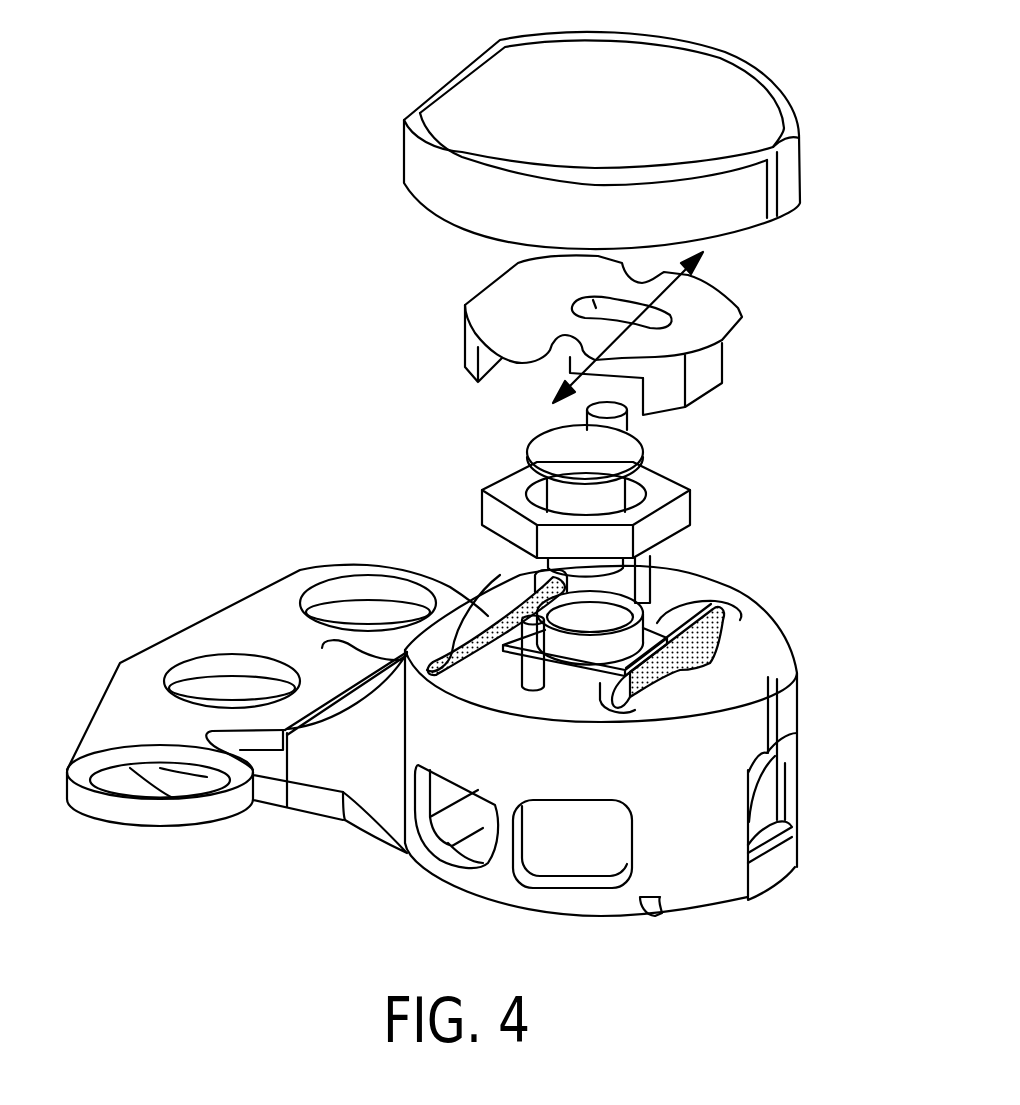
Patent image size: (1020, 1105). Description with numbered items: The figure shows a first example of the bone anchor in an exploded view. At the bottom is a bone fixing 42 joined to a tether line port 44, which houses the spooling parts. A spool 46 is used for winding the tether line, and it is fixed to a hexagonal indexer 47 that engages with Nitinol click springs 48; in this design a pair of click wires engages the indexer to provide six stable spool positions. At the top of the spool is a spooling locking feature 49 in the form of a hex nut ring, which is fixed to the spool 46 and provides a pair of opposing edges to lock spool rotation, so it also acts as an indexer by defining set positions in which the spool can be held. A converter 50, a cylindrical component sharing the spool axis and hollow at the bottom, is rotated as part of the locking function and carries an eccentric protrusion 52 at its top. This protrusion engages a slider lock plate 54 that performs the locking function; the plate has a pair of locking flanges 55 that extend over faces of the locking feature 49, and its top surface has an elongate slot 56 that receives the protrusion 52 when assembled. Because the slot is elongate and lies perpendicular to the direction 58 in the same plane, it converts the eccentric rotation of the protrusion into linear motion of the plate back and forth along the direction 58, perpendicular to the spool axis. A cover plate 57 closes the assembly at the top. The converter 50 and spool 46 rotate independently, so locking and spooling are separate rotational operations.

The bone fixing 42 is at (112, 668).
The tether line port 44 is at (765, 797).
The spool 46 is at (636, 604).
The hexagonal indexer 47 is at (742, 597).
The click springs 48 is at (488, 616).
The spooling locking feature 49 is at (692, 500).
The converter 50 is at (530, 452).
The eccentric protrusion 52 is at (640, 434).
The slider lock plate 54 is at (745, 318).
The locking flanges 55 is at (700, 388).
The elongate slot 56 is at (596, 308).
The cover plate 57 is at (800, 173).
The direction 58 is at (710, 250).